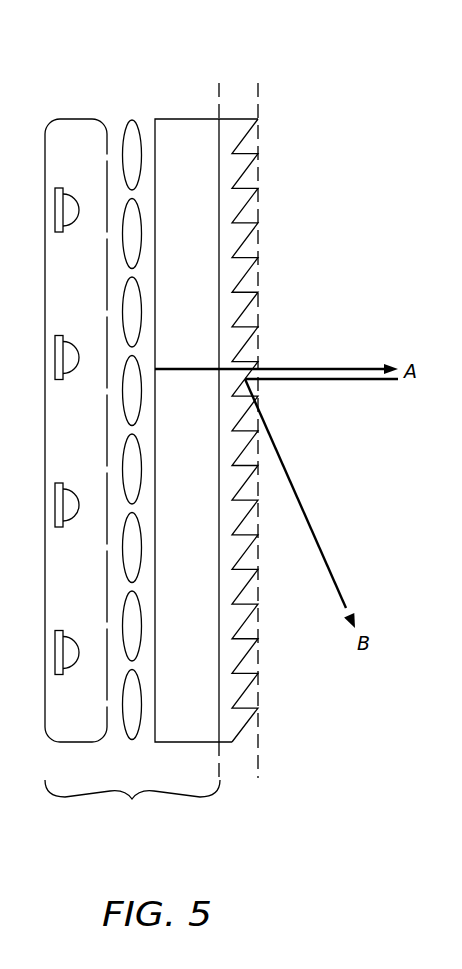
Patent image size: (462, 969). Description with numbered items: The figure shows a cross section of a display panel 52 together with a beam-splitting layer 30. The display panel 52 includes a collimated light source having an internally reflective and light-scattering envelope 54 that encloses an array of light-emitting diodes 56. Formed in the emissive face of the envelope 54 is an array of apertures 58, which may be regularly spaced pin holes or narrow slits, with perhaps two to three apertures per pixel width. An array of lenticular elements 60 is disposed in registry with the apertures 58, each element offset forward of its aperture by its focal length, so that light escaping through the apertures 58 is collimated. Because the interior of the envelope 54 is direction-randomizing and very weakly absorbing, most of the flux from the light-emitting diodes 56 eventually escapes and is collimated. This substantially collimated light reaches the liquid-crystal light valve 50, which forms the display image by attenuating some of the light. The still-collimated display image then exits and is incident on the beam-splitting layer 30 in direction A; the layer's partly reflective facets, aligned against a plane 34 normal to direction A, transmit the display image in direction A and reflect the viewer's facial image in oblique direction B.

The beam-splitting layer 30 is at (236, 783).
The plane 34 is at (258, 102).
The liquid-crystal light valve 50 is at (177, 441).
The display panel 52 is at (132, 804).
The internally reflective and light-scattering envelope 54 is at (64, 441).
The light-emitting diodes 56 is at (55, 210).
The apertures 58 is at (107, 236).
The lenticular elements 60 is at (123, 108).